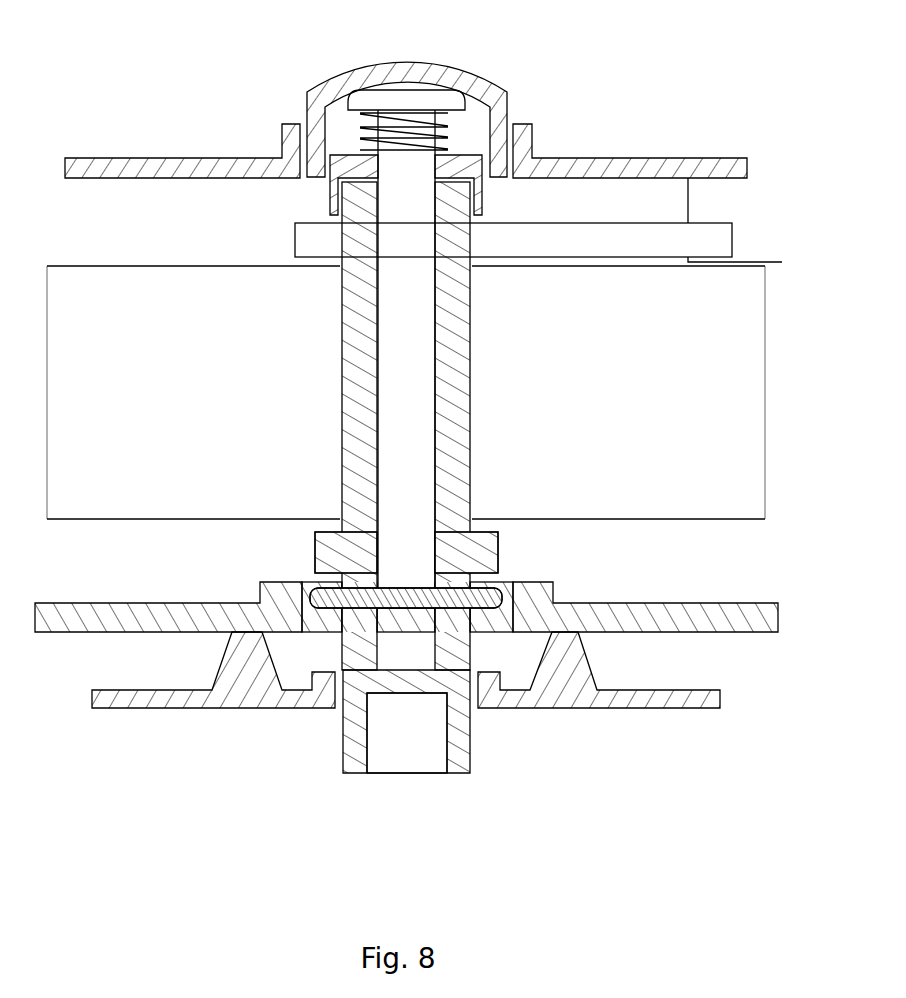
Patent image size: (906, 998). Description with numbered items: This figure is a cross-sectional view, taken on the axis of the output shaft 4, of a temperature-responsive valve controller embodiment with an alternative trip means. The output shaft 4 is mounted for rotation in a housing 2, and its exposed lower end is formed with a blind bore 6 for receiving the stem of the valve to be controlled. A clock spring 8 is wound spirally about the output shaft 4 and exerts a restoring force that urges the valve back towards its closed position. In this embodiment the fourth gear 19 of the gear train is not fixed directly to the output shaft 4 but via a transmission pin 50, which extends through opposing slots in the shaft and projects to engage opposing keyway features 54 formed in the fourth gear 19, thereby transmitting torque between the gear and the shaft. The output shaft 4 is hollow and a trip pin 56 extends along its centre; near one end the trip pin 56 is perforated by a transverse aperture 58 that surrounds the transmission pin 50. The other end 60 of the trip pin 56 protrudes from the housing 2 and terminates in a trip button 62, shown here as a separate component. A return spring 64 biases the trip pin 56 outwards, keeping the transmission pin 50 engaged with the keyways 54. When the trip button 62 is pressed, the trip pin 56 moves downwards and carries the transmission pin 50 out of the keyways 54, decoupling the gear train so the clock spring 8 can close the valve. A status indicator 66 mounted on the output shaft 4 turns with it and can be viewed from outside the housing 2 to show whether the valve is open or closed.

The housing 2 is at (627, 700).
The output shaft 4 is at (470, 740).
The blind bore 6 is at (445, 753).
The clock spring 8 is at (598, 303).
The fourth gear 19 is at (623, 607).
The transmission pin 50 is at (457, 587).
The keyway features 54 is at (510, 595).
The trip pin 56 is at (405, 252).
The transverse aperture 58 is at (395, 607).
The other end of the trip pin 60 is at (440, 102).
The trip button 62 is at (497, 93).
The return spring 64 is at (448, 137).
The status indicator 66 is at (577, 237).